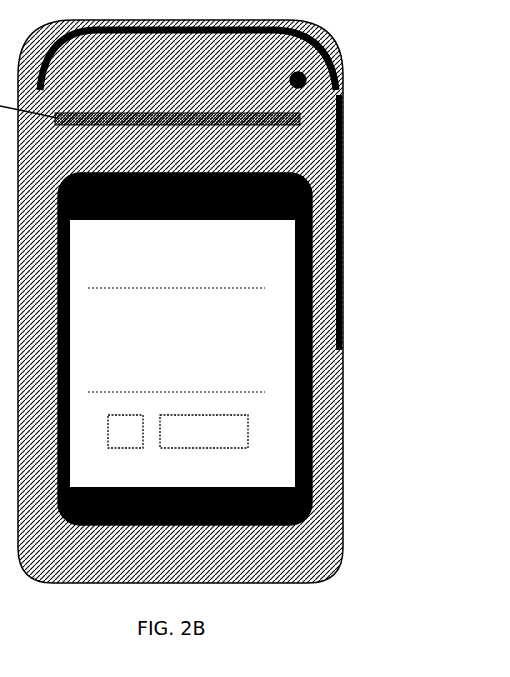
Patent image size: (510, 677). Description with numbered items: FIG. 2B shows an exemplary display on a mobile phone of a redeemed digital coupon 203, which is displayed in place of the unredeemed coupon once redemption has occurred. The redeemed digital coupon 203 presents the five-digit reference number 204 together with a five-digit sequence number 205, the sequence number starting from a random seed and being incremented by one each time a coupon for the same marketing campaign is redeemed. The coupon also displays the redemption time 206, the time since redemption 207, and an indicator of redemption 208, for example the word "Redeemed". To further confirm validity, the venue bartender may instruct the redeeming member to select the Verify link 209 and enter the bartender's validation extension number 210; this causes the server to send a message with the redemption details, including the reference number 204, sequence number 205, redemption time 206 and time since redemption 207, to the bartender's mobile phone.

The redeemed digital coupon 203 is at (265, 323).
The reference number 204 is at (90, 277).
The sequence number 205 is at (232, 268).
The redemption time 206 is at (246, 235).
The time since redemption 207 is at (170, 228).
The indicator of redemption 208 is at (113, 227).
The Verify link 209 is at (248, 427).
The validation extension number 210 is at (143, 448).